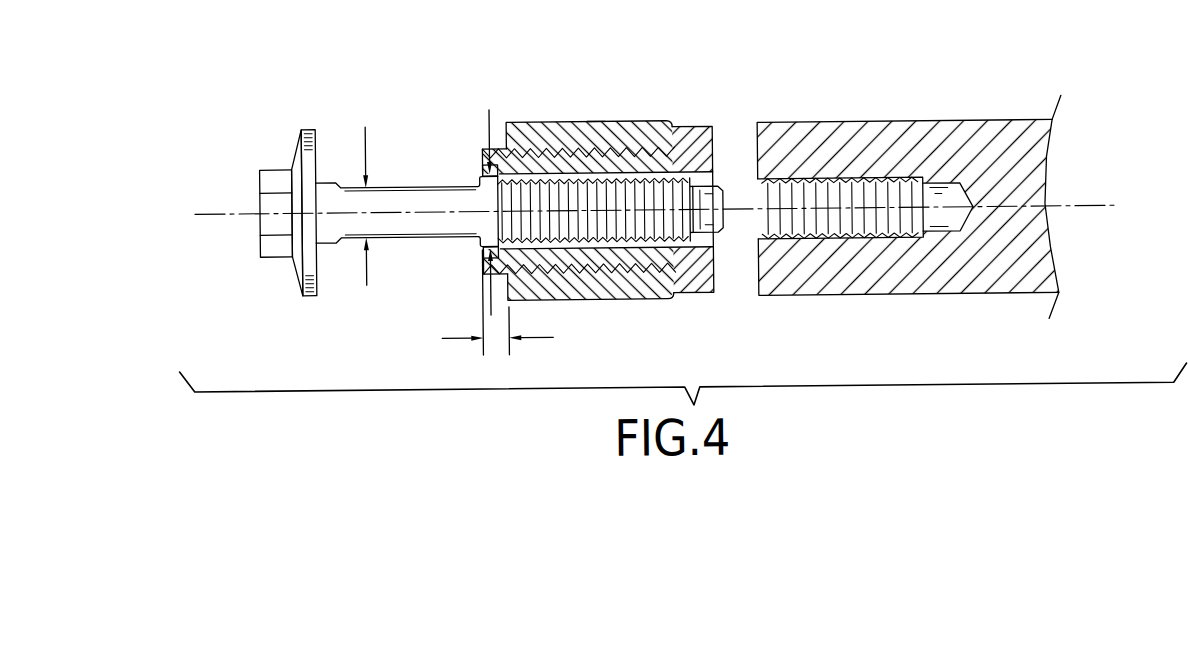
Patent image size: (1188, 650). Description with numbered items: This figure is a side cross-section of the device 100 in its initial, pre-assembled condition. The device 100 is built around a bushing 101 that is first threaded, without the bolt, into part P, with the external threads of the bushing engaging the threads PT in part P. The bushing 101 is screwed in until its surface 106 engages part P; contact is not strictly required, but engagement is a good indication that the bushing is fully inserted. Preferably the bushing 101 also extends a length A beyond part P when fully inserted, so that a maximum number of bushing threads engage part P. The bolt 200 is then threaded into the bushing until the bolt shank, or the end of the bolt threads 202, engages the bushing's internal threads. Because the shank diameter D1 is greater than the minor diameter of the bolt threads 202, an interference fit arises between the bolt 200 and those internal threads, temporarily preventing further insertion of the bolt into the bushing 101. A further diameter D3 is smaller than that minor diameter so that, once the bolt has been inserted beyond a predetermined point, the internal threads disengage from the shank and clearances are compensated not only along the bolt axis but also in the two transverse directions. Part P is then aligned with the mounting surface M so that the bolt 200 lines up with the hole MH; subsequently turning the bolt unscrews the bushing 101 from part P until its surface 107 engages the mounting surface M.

The device 100 is at (643, 181).
The bushing 101 is at (706, 121).
The surface 106 is at (598, 180).
The surface 107 is at (717, 285).
The bolt 200 is at (491, 234).
The bolt threads 202 is at (480, 245).
The shank diameter D1 is at (481, 201).
The diameter D3 is at (368, 192).
The length A is at (488, 302).
The part P is at (597, 121).
The threads PT is at (500, 146).
The mounting surface M is at (910, 210).
The hole MH is at (893, 226).